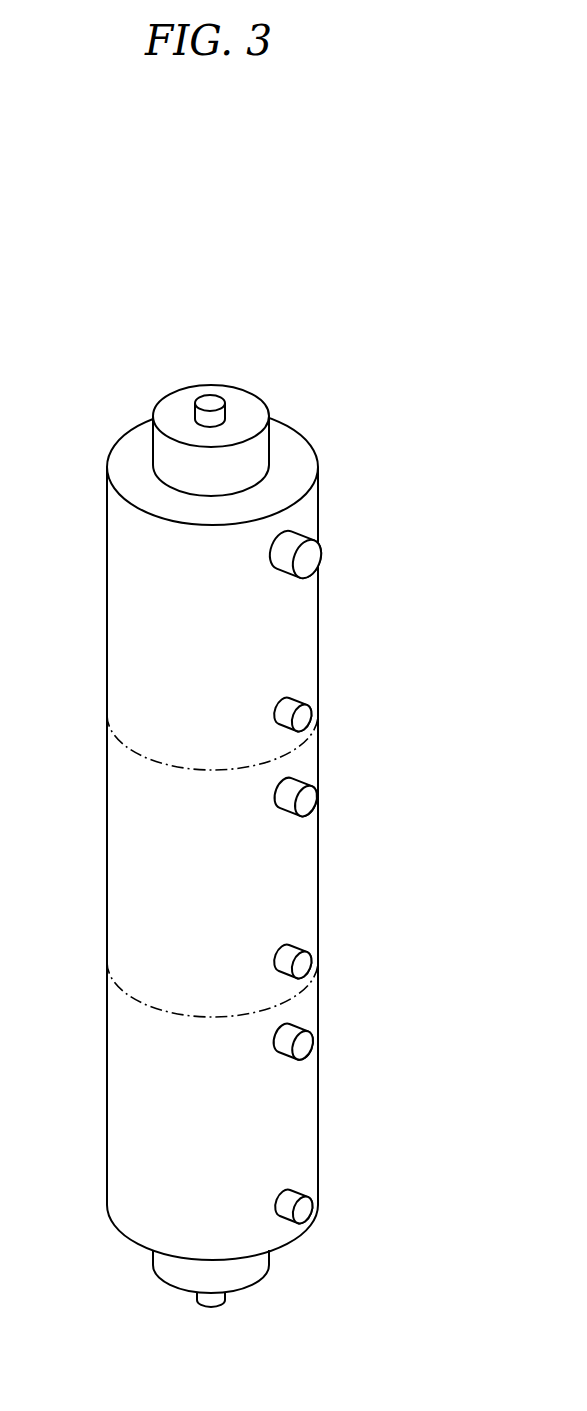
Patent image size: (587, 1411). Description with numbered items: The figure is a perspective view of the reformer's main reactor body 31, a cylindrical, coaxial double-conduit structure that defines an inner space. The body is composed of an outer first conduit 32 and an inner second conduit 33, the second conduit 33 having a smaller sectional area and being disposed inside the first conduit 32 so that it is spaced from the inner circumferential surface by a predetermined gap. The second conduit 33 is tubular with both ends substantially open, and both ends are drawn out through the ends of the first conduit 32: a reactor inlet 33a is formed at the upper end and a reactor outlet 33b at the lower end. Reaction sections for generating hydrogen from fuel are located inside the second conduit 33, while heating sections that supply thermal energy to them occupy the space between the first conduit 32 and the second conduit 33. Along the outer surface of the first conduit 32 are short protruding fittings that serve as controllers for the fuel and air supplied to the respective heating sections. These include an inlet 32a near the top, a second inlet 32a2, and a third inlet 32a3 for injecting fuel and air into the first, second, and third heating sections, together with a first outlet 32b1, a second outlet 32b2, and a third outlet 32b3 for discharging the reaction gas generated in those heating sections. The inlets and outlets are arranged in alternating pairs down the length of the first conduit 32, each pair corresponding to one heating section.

The main reactor body 31 is at (407, 782).
The first conduit 32 is at (107, 832).
The inlet 32a is at (308, 558).
The second inlet 32a2 is at (305, 805).
The third inlet 32a3 is at (305, 1048).
The first outlet 32b1 is at (300, 720).
The second outlet 32b2 is at (305, 967).
The third outlet 32b3 is at (305, 1212).
The second conduit 33 is at (252, 457).
The reactor inlet 33a is at (207, 402).
The reactor outlet 33b is at (217, 1305).